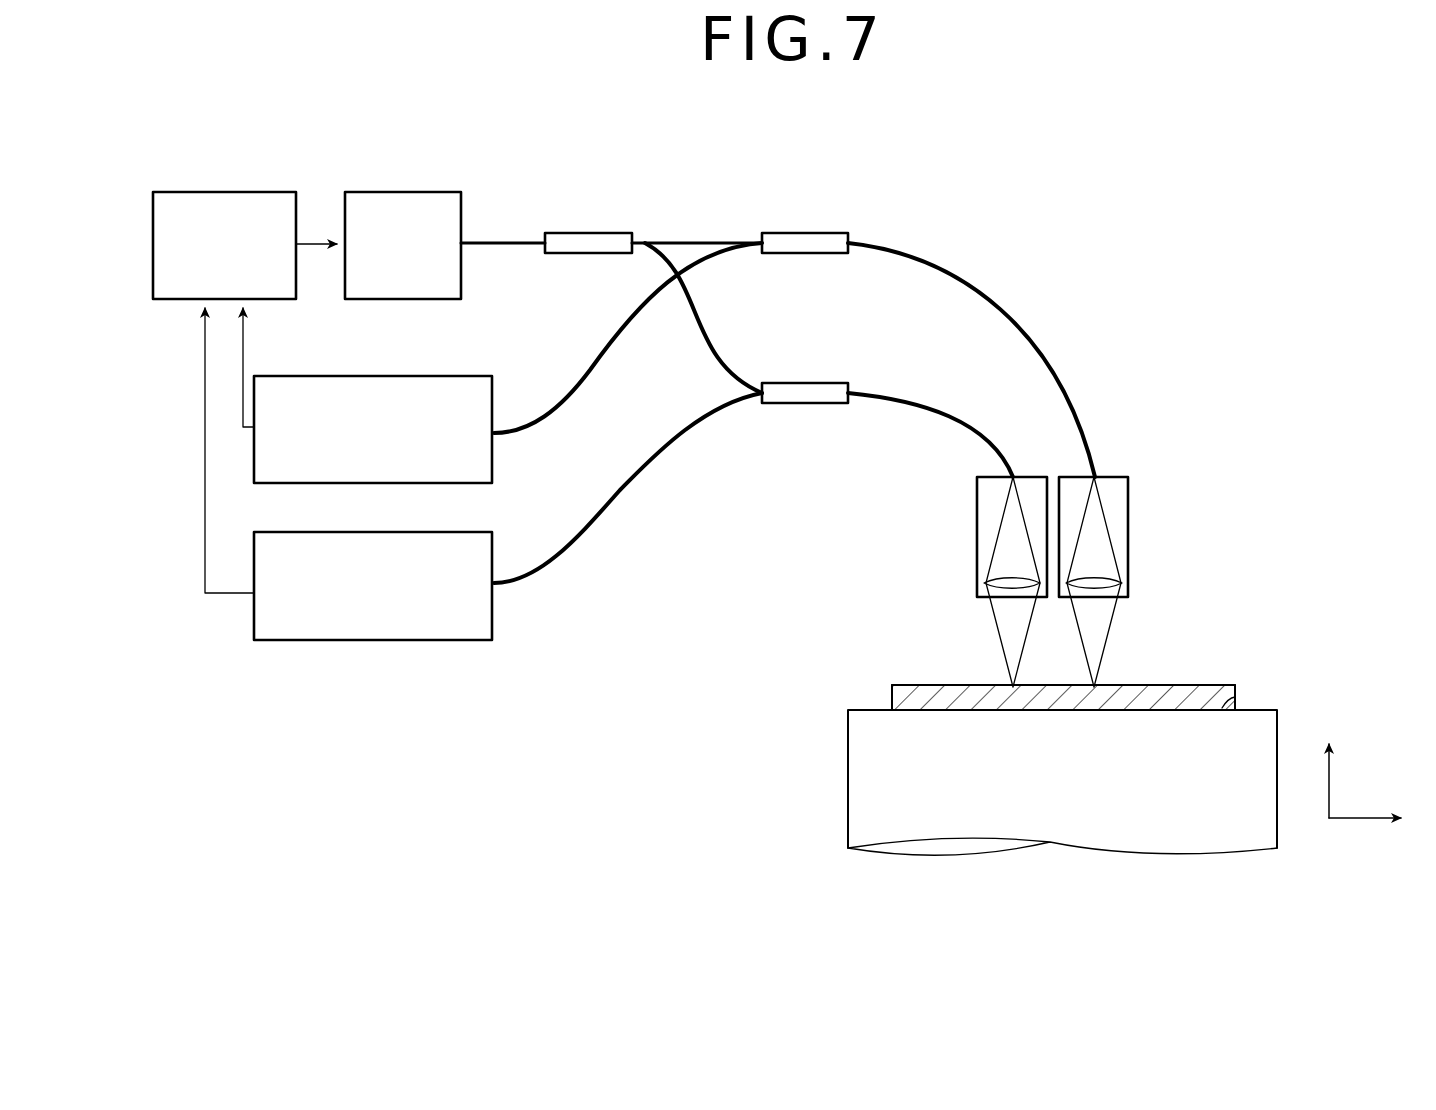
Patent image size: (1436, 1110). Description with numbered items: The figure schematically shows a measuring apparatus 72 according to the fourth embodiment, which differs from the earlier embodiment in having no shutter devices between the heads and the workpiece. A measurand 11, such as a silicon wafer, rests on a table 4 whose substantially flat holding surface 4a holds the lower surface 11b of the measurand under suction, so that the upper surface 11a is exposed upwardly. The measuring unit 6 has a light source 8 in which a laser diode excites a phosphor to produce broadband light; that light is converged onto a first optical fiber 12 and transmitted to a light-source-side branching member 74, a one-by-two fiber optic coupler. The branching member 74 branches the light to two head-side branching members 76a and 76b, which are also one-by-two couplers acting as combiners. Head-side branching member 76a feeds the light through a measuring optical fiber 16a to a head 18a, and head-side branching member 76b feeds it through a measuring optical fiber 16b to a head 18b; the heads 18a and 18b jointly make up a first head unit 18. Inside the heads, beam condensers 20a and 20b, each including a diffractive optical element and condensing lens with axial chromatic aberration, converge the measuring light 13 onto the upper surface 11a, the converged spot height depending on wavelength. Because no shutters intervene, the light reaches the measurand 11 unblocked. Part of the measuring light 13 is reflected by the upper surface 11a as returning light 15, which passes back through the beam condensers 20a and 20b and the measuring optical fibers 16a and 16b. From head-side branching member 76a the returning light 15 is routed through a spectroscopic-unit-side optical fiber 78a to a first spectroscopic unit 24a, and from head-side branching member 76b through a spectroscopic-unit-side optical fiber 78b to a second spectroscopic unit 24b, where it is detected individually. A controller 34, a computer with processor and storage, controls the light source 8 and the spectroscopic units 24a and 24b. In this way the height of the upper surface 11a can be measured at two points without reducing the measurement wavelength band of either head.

The measuring apparatus 72 is at (1210, 171).
The measuring unit 6 is at (383, 759).
The controller 34 is at (222, 192).
The light source 8 is at (392, 192).
The first spectroscopic unit 24a is at (400, 376).
The second spectroscopic unit 24b is at (402, 640).
The first optical fiber 12 is at (500, 243).
The light-source-side branching member 74 is at (588, 233).
The head-side branching member 76a is at (800, 233).
The head-side branching member 76b is at (800, 383).
The spectroscopic-unit-side optical fiber 78a is at (592, 375).
The spectroscopic-unit-side optical fiber 78b is at (627, 492).
The measuring optical fiber 16a is at (975, 285).
The measuring optical fiber 16b is at (930, 397).
The first head unit 18 is at (1182, 476).
The head 18a is at (1117, 468).
The head 18b is at (1029, 468).
The beam condenser 20a is at (1127, 583).
The beam condenser 20b is at (984, 583).
The measuring light 13 is at (1068, 655).
The returning light 15 is at (612, 385).
The substrate 4 is at (860, 860).
The holding surface 4a is at (1235, 695).
The measurand 11 is at (892, 700).
The upper surface 11a is at (930, 685).
The lower surface 11b is at (925, 710).